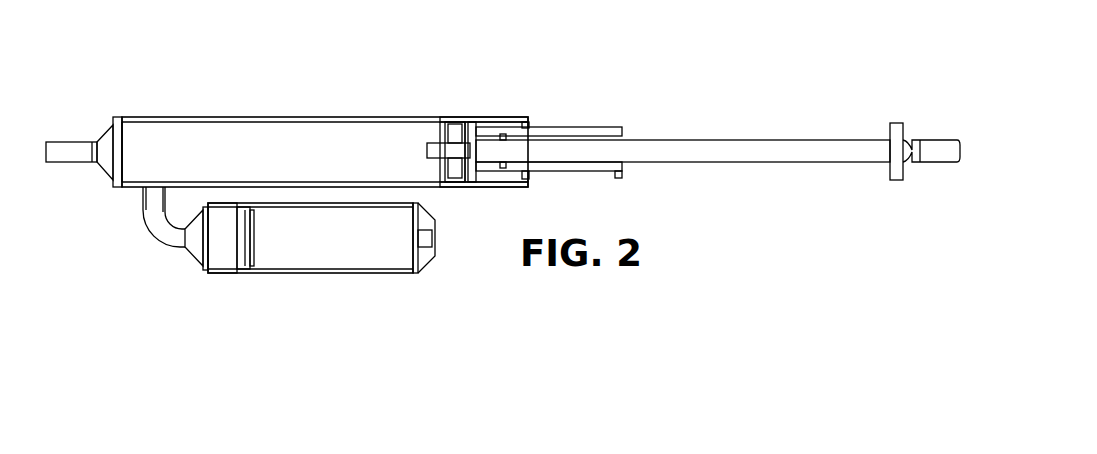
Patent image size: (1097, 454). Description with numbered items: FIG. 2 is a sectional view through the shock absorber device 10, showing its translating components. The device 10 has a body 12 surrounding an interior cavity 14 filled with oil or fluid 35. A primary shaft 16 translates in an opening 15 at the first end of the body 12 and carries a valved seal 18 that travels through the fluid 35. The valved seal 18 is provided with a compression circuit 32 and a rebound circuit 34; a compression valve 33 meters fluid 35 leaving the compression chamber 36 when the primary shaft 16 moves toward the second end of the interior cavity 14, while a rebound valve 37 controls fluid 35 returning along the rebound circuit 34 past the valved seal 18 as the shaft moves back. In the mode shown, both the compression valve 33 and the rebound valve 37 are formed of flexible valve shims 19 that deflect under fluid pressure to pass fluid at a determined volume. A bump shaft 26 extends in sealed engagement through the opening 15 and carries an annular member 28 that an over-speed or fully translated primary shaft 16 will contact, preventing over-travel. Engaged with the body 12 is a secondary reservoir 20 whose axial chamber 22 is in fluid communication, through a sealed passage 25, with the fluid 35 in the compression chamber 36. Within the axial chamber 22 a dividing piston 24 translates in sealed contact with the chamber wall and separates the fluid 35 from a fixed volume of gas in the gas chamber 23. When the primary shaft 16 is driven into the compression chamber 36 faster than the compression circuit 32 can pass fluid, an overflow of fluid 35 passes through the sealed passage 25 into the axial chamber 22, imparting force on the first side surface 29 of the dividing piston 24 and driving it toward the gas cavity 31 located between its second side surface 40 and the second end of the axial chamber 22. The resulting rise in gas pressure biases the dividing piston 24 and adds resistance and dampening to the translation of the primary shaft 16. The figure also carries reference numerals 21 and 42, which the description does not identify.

The shock absorber device 10 is at (510, 98).
The body 12 is at (267, 117).
The interior cavity 14 is at (190, 128).
The opening 15 is at (527, 128).
The primary shaft 16 is at (700, 128).
The valved seal 18 is at (446, 130).
The flexible valve shims 19 is at (468, 178).
The secondary reservoir 20 is at (353, 274).
The end cap 21 is at (230, 272).
The axial chamber 22 is at (287, 252).
The gas chamber 23 is at (349, 238).
The dividing piston 24 is at (268, 262).
The sealed passage 25 is at (168, 238).
The bump shaft 26 is at (567, 128).
The annular member 28 is at (890, 118).
The first side surface 29 is at (233, 272).
The gas cavity 31 is at (400, 255).
The compression circuit 32 is at (455, 128).
The compression valve 33 is at (434, 128).
The rebound circuit 34 is at (445, 176).
The fluid 35 is at (329, 152).
The compression chamber 36 is at (333, 130).
The rebound valve 37 is at (471, 128).
The second side surface 40 is at (258, 247).
The fasteners 42 is at (530, 179).